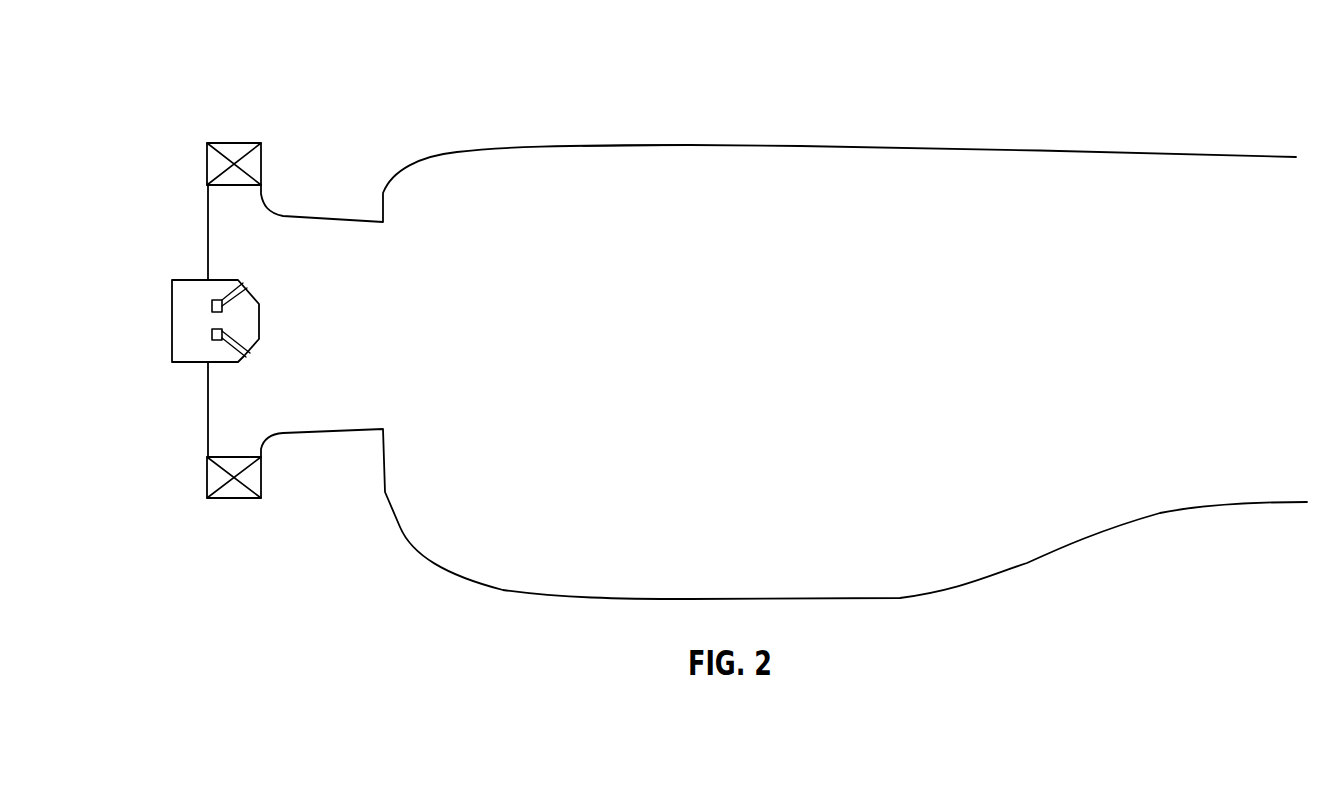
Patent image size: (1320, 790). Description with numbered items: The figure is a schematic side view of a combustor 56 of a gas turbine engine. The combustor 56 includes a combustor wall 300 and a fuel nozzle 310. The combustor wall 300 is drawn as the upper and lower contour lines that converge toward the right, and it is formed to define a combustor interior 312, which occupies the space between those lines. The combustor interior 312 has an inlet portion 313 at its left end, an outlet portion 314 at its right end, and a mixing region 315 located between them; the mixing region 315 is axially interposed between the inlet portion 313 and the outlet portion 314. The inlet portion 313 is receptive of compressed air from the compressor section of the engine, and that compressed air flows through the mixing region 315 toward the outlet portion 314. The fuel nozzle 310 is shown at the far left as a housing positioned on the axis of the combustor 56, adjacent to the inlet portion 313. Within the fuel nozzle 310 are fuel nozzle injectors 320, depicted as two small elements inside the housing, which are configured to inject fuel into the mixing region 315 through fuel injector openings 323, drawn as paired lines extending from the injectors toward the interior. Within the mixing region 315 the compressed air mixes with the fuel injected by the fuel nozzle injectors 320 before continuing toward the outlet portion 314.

The combustor wall 300 is at (876, 145).
The combustor 56 is at (626, 145).
The inlet portion 313 is at (230, 130).
The fuel nozzle 310 is at (178, 293).
The fuel nozzle injectors 320 is at (212, 333).
The fuel injector openings 323 is at (240, 345).
The mixing region 315 is at (346, 322).
The combustor interior 312 is at (739, 389).
The outlet portion 314 is at (1313, 336).